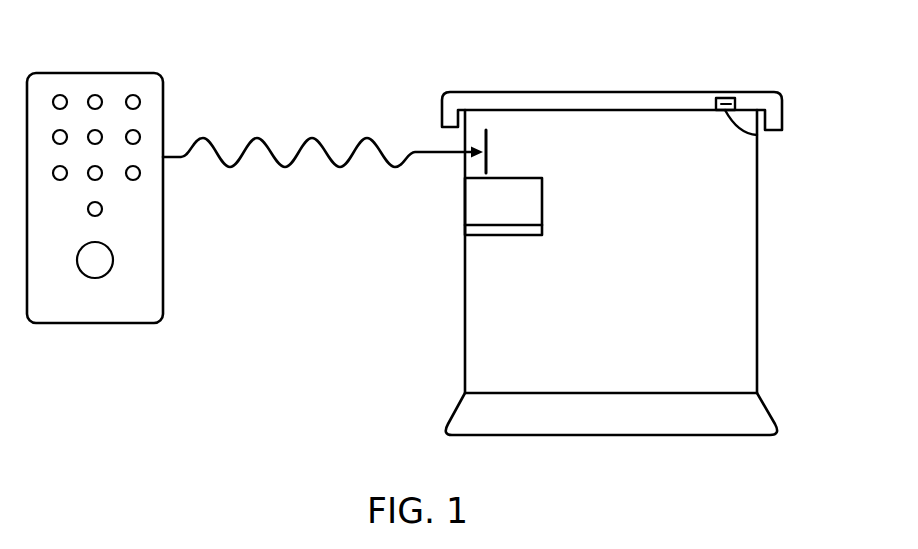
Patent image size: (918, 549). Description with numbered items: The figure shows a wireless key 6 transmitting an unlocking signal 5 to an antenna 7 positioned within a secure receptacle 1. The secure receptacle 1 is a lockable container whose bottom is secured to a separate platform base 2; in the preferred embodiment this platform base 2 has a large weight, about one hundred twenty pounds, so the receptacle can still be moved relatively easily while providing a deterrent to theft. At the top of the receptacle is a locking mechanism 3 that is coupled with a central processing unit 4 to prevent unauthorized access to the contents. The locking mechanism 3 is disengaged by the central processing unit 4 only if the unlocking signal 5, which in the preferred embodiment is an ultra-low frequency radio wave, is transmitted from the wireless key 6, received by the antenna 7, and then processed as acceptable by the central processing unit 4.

The secure receptacle 1 is at (758, 278).
The platform base 2 is at (773, 413).
The locking mechanism 3 is at (737, 122).
The central processing unit 4 is at (475, 200).
The unlocking signal 5 is at (312, 135).
The wireless key 6 is at (90, 73).
The antenna 7 is at (486, 137).